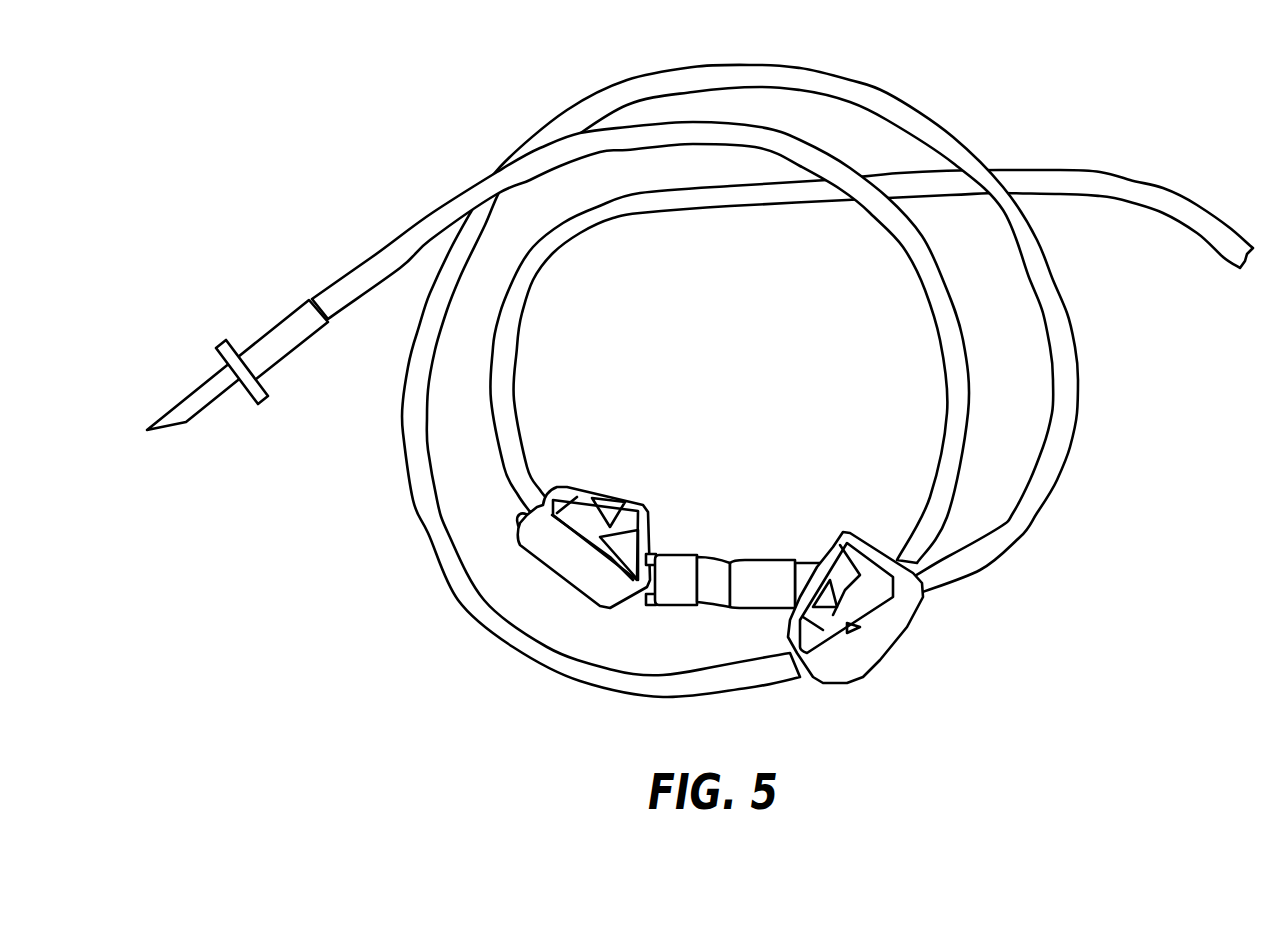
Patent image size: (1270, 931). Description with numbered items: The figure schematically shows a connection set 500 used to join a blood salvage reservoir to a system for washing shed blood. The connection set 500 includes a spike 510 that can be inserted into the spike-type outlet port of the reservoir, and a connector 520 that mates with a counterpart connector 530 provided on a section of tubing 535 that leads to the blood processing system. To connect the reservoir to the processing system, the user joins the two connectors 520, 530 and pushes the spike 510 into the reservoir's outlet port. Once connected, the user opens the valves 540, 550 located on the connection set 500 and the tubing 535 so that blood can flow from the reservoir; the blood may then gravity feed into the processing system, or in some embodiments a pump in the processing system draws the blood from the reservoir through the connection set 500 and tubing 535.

The connection set 500 is at (700, 378).
The spike 510 is at (196, 424).
The connector 520 is at (811, 572).
The counterpart connector 530 is at (680, 577).
The tubing 535 is at (375, 267).
The valve 540 is at (887, 637).
The valve 550 is at (570, 487).